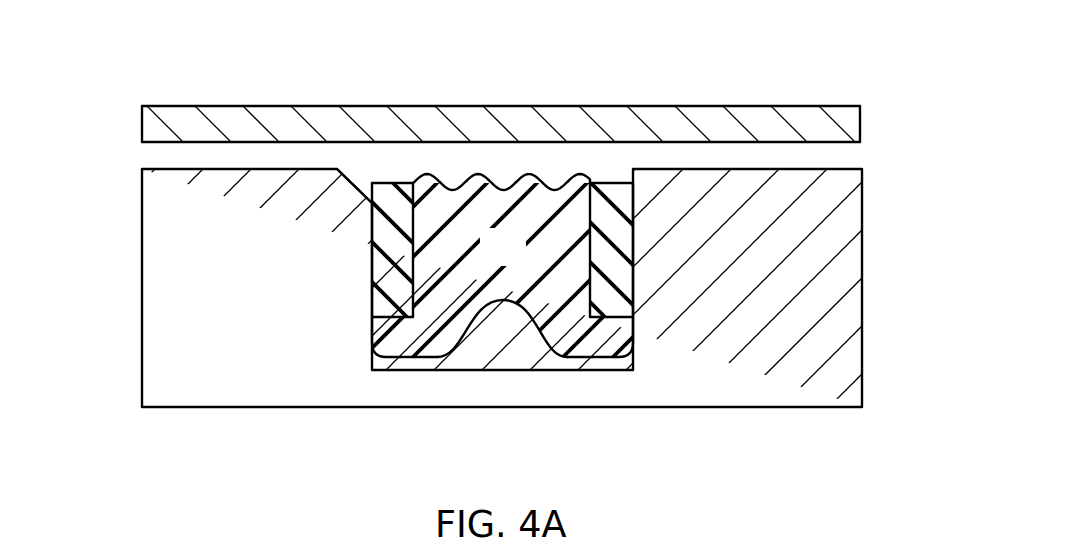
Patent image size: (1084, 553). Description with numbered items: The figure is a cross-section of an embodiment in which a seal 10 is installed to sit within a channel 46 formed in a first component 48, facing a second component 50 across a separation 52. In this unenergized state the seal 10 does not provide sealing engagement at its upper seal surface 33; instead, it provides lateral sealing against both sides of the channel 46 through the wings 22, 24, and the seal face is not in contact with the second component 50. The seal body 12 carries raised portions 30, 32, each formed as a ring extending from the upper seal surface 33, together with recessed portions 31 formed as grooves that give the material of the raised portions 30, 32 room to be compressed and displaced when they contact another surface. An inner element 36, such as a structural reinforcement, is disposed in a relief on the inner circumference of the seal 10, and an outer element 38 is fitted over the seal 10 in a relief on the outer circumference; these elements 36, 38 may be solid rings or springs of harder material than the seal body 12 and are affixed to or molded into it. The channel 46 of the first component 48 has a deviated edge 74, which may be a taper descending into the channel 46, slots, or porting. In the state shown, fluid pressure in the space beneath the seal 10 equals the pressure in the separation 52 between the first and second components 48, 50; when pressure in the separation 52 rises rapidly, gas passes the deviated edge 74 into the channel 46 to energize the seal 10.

The seal 10 is at (706, 48).
The seal body 12 is at (515, 258).
The wing 22 is at (375, 328).
The wing 24 is at (618, 332).
The raised portion 30 is at (483, 177).
The recessed portion 31 is at (450, 188).
The raised portion 32 is at (528, 173).
The upper seal surface 33 is at (552, 187).
The inner element 36 is at (380, 230).
The outer element 38 is at (622, 238).
The channel 46 is at (487, 358).
The first component 48 is at (158, 391).
The second component 50 is at (150, 125).
The separation 52 is at (848, 157).
The deviated edge 74 is at (352, 178).